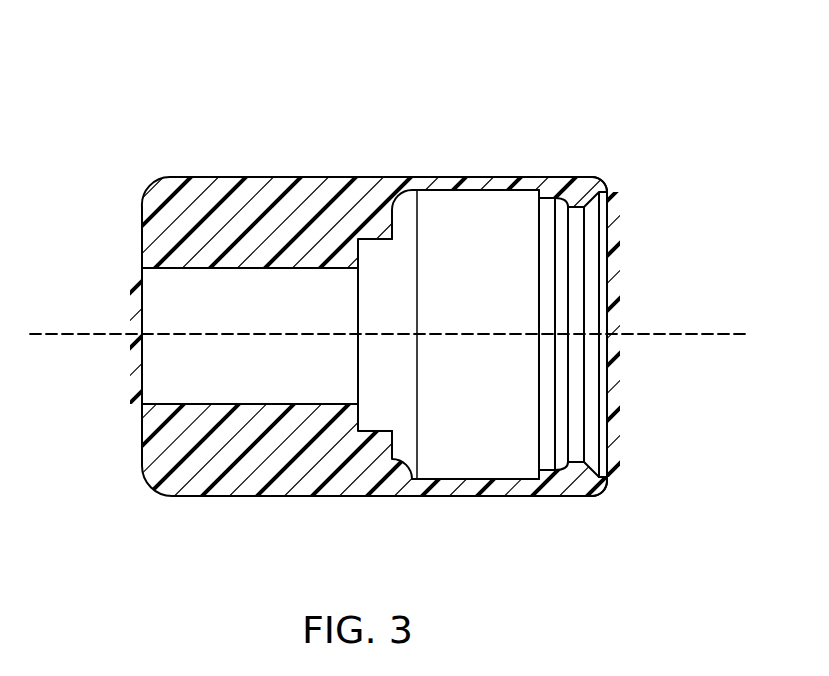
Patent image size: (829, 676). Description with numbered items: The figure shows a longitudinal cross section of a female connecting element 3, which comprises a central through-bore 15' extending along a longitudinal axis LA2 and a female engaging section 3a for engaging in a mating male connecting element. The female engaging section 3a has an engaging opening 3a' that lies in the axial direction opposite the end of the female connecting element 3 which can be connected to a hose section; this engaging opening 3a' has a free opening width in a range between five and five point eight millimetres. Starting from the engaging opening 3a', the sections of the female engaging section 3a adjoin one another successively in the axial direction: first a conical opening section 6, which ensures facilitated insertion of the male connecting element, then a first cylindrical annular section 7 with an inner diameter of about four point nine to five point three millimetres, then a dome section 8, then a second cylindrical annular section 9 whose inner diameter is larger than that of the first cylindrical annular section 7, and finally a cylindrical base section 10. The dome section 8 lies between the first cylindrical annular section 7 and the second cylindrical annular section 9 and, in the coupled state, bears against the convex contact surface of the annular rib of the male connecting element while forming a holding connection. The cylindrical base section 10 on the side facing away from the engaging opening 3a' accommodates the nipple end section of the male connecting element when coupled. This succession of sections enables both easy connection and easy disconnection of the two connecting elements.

The female connecting element 3 is at (90, 133).
The female engaging section 3a is at (681, 320).
The engaging opening 3a' is at (694, 336).
The conical opening section 6 is at (598, 461).
The first cylindrical annular section 7 is at (591, 198).
The dome section 8 is at (572, 198).
The second cylindrical annular section 9 is at (553, 195).
The cylindrical base section 10 is at (478, 185).
The central through-bore 15' is at (209, 335).
The longitudinal axis LA2 is at (389, 316).